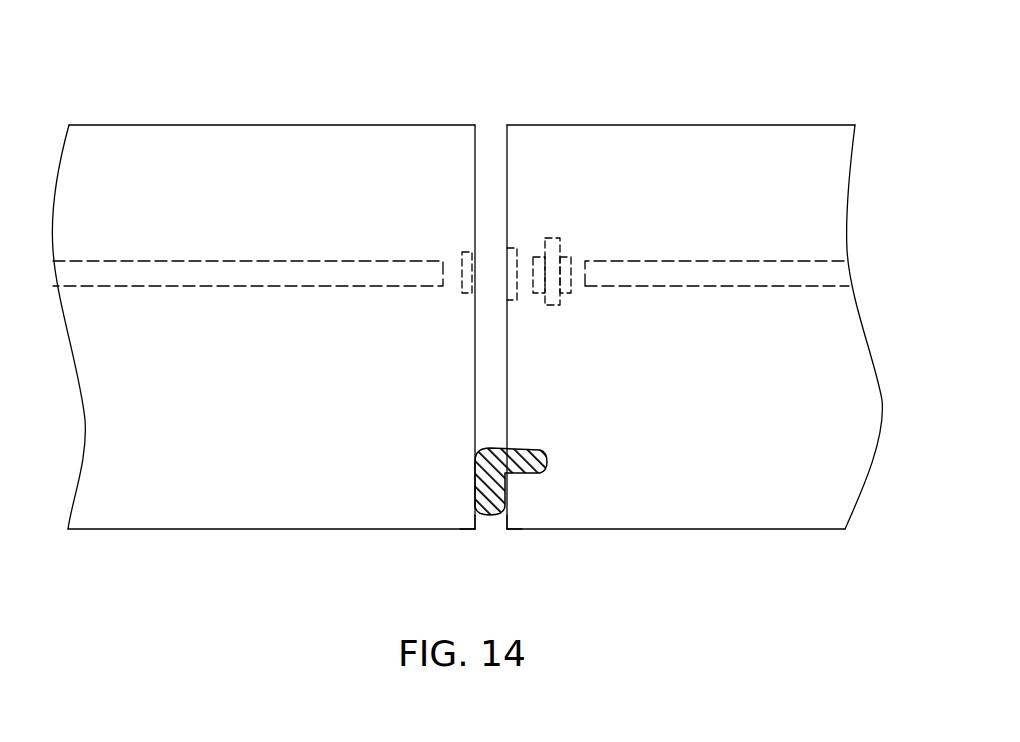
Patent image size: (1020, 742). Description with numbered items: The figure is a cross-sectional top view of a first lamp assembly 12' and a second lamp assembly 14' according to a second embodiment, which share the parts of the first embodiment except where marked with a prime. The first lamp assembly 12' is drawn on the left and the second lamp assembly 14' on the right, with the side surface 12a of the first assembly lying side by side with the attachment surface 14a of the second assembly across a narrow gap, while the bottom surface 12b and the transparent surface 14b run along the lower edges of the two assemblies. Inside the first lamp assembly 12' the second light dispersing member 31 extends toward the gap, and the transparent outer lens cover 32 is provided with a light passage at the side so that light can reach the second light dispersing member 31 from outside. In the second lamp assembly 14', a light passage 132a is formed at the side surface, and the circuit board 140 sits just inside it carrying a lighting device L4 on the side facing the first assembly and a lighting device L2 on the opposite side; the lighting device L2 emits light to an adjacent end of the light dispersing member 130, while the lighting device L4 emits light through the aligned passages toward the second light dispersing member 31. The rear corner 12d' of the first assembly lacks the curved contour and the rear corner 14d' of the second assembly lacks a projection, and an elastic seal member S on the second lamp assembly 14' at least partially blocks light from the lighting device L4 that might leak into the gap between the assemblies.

The first lamp assembly 12' is at (263, 293).
The second lamp assembly 14' is at (694, 294).
The side surface 12a is at (475, 395).
The attachment surface 14a is at (507, 352).
The bottom surface of first substrate 12b is at (205, 530).
The transparent surface 14b is at (743, 530).
The rear corner 12d' is at (444, 545).
The rear corner 14d' is at (542, 545).
The second light dispersing member 31 is at (224, 272).
The transparent outer lens cover 32 is at (467, 255).
The light dispersing member 130 is at (757, 272).
The light passage 132a is at (513, 302).
The circuit board 140 is at (553, 243).
The lighting device L4 is at (539, 252).
The lighting device L2 is at (567, 288).
The elastic seal member S is at (489, 502).